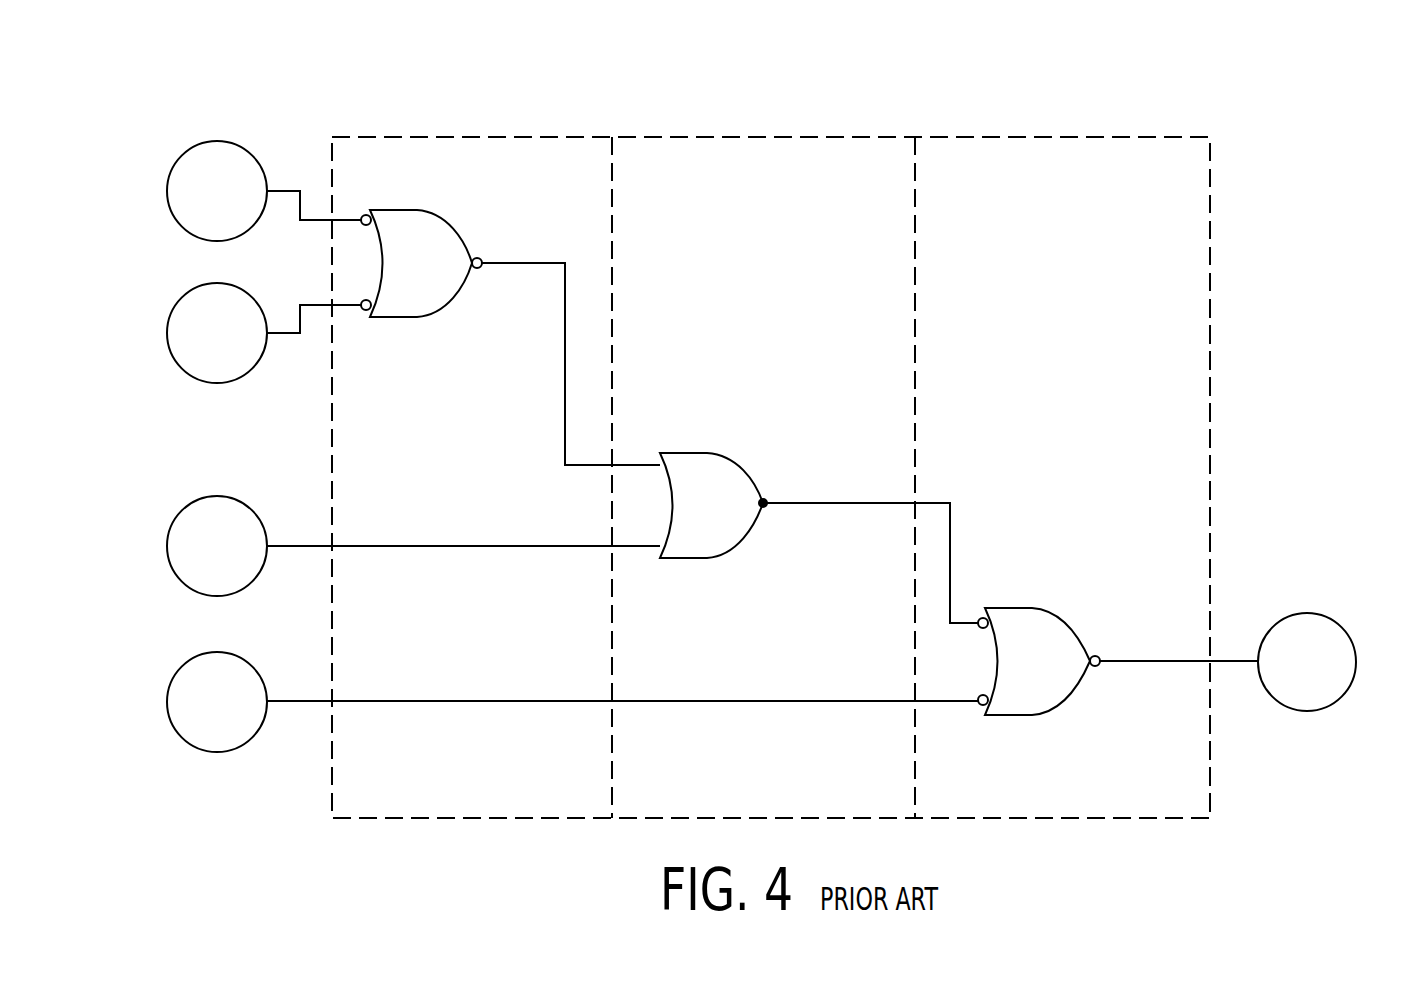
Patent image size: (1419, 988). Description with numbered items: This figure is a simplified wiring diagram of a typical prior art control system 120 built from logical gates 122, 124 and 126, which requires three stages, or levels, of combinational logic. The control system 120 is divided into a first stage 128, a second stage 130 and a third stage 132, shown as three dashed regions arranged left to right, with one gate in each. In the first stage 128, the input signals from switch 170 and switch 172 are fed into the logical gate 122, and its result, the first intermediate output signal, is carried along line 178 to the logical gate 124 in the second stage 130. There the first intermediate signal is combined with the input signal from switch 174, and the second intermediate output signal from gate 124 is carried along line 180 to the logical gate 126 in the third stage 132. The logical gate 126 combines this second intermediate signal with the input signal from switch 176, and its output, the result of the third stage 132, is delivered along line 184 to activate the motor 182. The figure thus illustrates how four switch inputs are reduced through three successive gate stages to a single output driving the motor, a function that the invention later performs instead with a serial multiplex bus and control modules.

The control system 120 is at (722, 90).
The logical gate 122 is at (397, 210).
The logical gate 124 is at (682, 453).
The logical gate 126 is at (1005, 608).
The first stage 128 is at (518, 160).
The second stage 130 is at (820, 162).
The third stage 132 is at (1072, 162).
The switch 170 is at (197, 145).
The switch 172 is at (197, 287).
The switch 174 is at (197, 502).
The switch 176 is at (197, 657).
The output line of first NOR gate 178 is at (478, 252).
The output line of OR gate 180 is at (765, 500).
The motor 182 is at (1305, 613).
The output line of second NOR gate 184 is at (1102, 647).